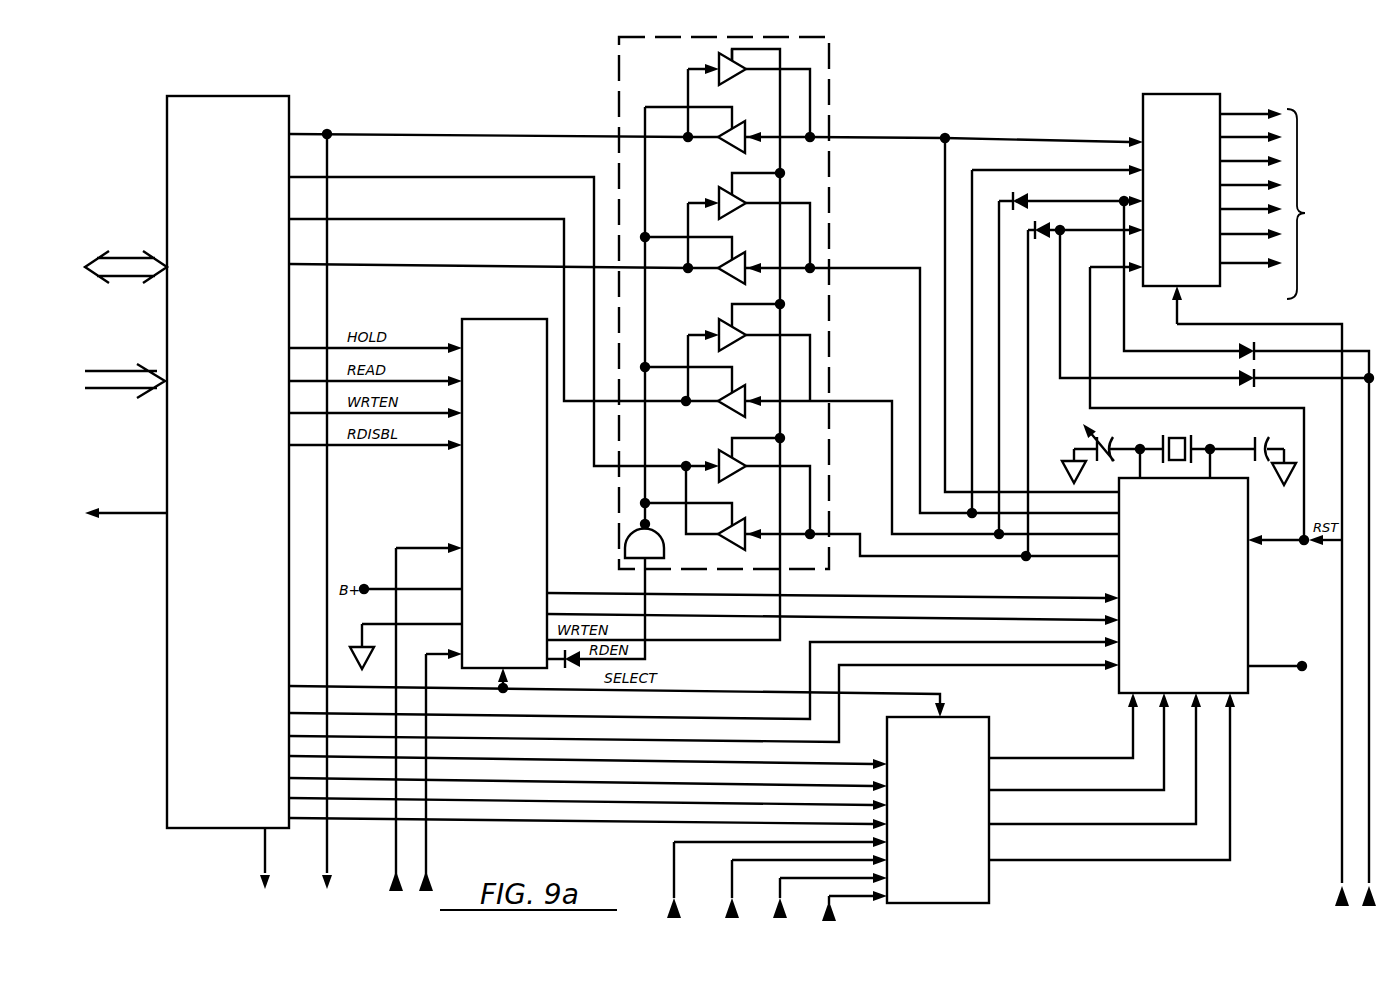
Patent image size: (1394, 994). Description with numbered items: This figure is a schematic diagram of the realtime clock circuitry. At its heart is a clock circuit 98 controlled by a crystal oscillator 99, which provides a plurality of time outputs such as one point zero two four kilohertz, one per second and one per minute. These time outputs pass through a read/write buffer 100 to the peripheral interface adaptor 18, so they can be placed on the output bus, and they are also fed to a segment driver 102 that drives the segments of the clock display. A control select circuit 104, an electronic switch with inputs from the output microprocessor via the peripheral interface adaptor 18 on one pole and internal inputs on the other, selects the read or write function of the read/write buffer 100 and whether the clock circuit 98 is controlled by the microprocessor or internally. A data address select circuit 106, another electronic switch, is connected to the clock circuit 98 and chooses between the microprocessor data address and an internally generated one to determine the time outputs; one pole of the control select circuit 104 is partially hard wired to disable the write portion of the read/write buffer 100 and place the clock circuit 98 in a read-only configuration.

The peripheral interface adaptor 18 is at (232, 95).
The read/write buffer 100 is at (838, 90).
The segment driver 102 is at (1183, 93).
The control select circuit 104 is at (550, 519).
The data address select circuit 106 is at (992, 730).
The clock circuit 98 is at (1262, 579).
The crystal oscillator 99 is at (1158, 434).